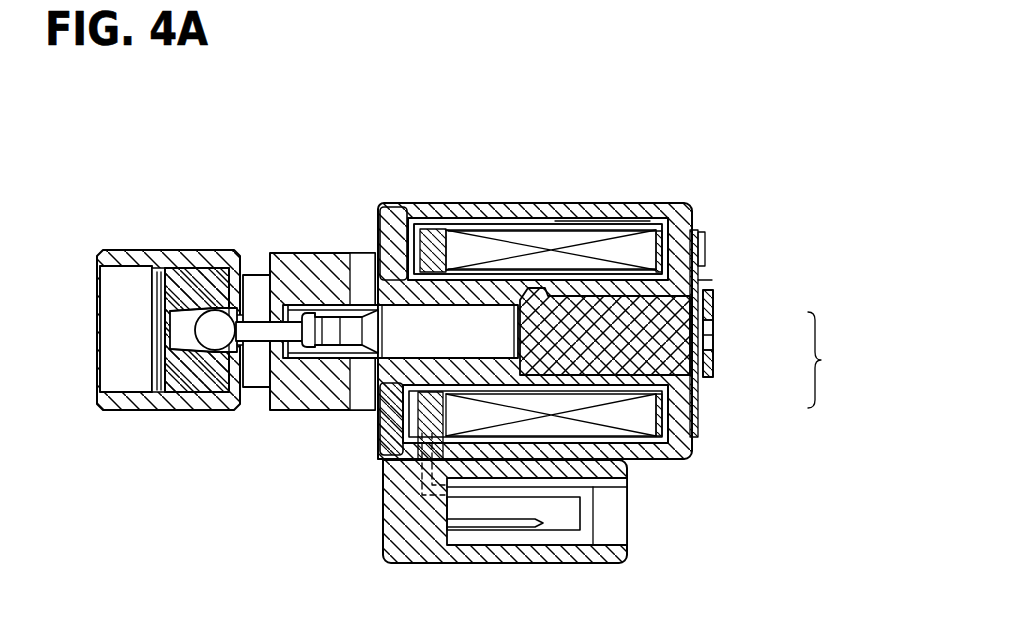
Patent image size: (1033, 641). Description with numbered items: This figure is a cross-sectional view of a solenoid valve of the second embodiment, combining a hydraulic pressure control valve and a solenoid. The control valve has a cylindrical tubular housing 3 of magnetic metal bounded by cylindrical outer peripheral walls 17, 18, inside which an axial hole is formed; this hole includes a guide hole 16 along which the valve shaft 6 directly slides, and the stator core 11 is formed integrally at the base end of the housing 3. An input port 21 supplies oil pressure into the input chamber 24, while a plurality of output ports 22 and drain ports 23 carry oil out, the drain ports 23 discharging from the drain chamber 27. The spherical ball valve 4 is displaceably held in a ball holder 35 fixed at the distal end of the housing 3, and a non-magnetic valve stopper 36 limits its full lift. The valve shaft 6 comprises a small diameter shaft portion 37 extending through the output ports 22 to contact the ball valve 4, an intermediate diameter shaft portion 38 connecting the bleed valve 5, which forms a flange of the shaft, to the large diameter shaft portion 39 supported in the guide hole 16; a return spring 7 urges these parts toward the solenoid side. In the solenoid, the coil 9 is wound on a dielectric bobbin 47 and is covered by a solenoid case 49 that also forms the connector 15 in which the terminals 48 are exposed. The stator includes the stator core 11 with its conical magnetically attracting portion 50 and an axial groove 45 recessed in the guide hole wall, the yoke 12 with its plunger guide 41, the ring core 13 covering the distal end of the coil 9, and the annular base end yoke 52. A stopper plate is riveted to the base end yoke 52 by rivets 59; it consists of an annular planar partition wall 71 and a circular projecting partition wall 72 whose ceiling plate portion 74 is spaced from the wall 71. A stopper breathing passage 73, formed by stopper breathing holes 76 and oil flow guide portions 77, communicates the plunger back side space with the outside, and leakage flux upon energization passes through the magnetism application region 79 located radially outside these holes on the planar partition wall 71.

The housing 3 is at (165, 265).
The cylindrical outer peripheral wall 17 is at (197, 330).
The ball valve 4 is at (213, 335).
The bleed valve 5 is at (296, 400).
The valve shaft 6 is at (418, 222).
The large diameter shaft portion 39 is at (538, 249).
The return spring 7 is at (270, 400).
The coil 9 is at (555, 222).
The stator core 11 is at (480, 245).
The yoke 12 is at (568, 240).
The ring core 13 is at (385, 205).
The connector 15 is at (512, 563).
The guide hole 16 is at (460, 520).
The cylindrical outer peripheral wall 18 is at (372, 445).
The input port 21 is at (97, 330).
The output ports 22 is at (257, 275).
The drain ports 23 is at (340, 258).
The input chamber 24 is at (117, 283).
The drain chamber 27 is at (325, 400).
The ball holder 35 is at (210, 268).
The valve stopper 36 is at (165, 370).
The small diameter shaft portion 37 is at (262, 400).
The intermediate diameter shaft portion 38 is at (342, 405).
The plunger guide 41 is at (600, 240).
The axial groove 45 is at (433, 315).
The bobbin 47 is at (662, 458).
The terminals 48 is at (540, 530).
The solenoid case 49 is at (632, 462).
The magnetically attracting portion 50 is at (530, 238).
The annular base end yoke 52 is at (676, 230).
The rivets 59 is at (702, 245).
The planar partition wall 71 is at (700, 437).
The projecting partition wall 72 is at (715, 300).
The ceiling plate portion 74 is at (708, 333).
The stopper breathing holes 76 is at (712, 335).
The oil flow guide portions 77 is at (712, 305).
The stopper breathing passage 73 is at (834, 360).
The magnetism application region 79 is at (718, 285).